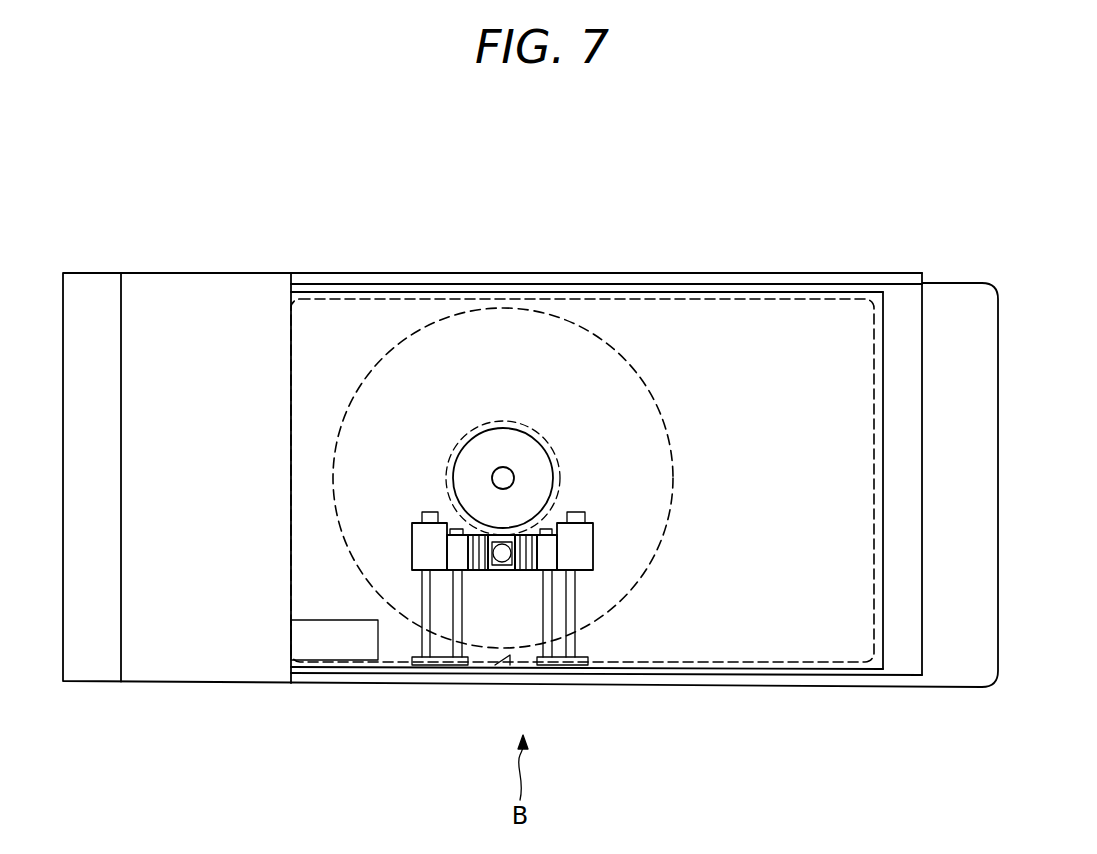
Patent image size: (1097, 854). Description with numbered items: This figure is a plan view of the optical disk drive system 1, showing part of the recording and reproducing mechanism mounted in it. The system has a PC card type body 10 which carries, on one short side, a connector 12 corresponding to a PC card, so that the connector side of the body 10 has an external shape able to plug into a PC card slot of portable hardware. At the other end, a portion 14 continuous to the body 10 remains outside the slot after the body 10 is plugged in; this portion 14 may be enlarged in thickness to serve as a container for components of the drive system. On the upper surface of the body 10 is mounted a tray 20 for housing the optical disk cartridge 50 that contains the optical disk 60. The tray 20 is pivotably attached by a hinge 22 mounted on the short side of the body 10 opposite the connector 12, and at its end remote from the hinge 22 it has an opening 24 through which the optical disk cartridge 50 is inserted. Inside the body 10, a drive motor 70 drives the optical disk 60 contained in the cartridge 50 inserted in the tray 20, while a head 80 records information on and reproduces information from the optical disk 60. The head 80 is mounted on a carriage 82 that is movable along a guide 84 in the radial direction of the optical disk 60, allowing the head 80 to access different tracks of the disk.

The optical disk drive system 1 is at (905, 232).
The body 10 is at (510, 273).
The connector 12 is at (997, 481).
The portion 14 is at (204, 668).
The tray 20 is at (875, 665).
The hinge 22 is at (291, 330).
The opening 24 is at (885, 642).
The optical disk cartridge 50 is at (740, 652).
The optical disk 60 is at (600, 358).
The drive motor 70 is at (538, 473).
The head 80 is at (505, 560).
The carriage 82 is at (457, 555).
The guide 84 is at (437, 647).